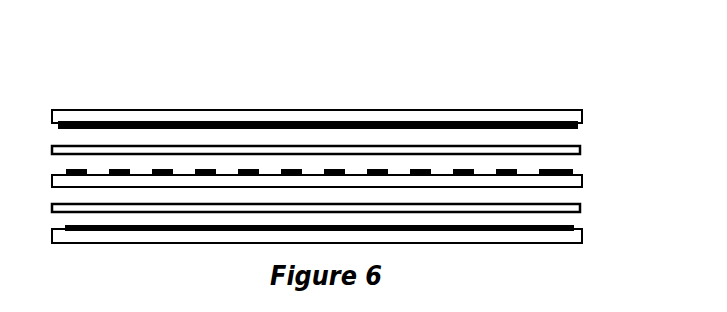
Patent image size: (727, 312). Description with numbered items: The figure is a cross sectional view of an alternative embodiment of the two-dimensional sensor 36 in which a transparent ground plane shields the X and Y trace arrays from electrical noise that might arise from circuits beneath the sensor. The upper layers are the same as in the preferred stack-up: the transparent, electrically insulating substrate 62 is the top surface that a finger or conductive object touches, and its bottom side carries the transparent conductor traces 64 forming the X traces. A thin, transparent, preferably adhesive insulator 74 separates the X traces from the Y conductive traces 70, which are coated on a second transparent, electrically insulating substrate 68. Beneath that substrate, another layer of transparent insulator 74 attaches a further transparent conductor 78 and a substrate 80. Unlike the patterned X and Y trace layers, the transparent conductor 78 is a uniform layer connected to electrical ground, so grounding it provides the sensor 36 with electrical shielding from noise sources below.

The two-dimensional sensor 36 is at (311, 74).
The transparent, electrically insulating substrate 62 is at (548, 110).
The transparent conductor traces 64 is at (576, 125).
The transparent insulator 74 is at (582, 150).
The Y conductive traces 70 is at (576, 171).
The transparent, electrically insulating substrate 68 is at (583, 186).
The transparent conductor 78 is at (576, 230).
The substrate 80 is at (560, 243).